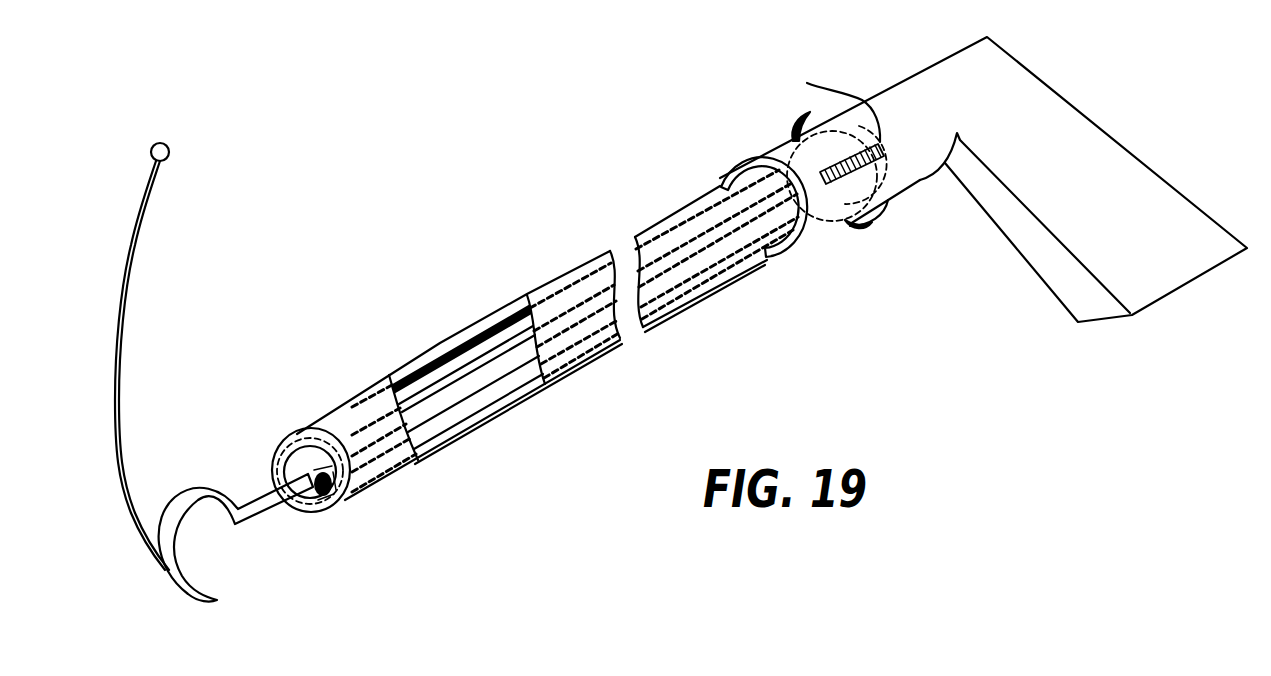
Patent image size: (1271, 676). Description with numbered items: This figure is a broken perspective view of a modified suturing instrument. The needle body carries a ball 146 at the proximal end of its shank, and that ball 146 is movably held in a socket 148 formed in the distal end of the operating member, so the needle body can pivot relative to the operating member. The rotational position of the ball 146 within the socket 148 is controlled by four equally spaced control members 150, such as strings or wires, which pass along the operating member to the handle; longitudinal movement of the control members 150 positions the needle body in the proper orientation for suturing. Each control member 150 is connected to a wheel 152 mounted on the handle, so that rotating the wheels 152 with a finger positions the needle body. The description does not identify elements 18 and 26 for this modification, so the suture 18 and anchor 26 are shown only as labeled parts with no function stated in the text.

The suture 18 is at (140, 212).
The anchor ball 26 is at (170, 150).
The ball 146 is at (313, 494).
The socket 148 is at (352, 508).
The control members 150 is at (458, 356).
The wheel 152 is at (812, 108).